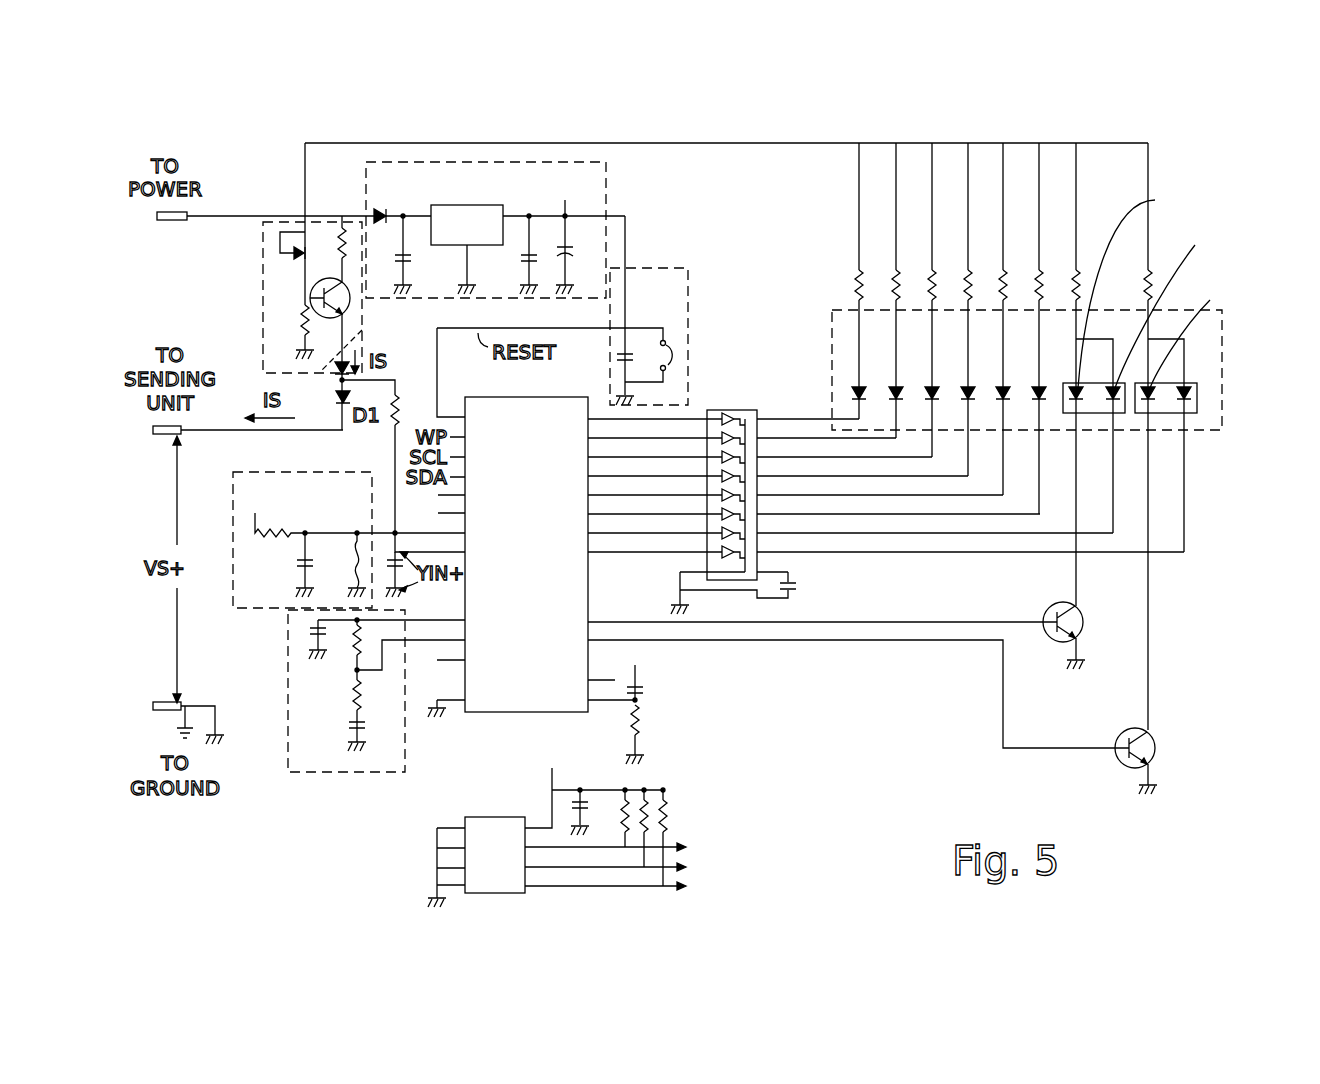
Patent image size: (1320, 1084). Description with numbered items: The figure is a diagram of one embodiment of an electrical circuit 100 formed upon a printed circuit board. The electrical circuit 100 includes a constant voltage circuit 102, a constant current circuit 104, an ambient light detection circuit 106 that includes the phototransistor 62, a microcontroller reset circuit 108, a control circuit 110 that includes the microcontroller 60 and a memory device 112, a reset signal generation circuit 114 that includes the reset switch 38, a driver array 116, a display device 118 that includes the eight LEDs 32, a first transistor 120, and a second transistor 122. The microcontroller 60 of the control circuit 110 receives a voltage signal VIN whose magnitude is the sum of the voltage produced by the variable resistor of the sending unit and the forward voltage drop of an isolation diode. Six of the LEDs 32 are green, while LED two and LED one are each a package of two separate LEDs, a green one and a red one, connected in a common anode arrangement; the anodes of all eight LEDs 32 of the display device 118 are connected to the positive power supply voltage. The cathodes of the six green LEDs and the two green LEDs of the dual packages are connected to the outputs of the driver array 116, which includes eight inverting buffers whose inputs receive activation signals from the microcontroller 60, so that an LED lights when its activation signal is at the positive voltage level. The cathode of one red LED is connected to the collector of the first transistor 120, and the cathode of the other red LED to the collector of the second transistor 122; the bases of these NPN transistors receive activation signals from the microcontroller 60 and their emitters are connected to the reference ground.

The electrical circuit 100 is at (690, 133).
The constant voltage circuit 102 is at (486, 230).
The constant current circuit 104 is at (263, 316).
The ambient light detection circuit 106 is at (349, 540).
The microcontroller reset circuit 108 is at (376, 691).
The control circuit 110 is at (512, 836).
The memory device 112 is at (494, 829).
The reset signal generation circuit 114 is at (674, 310).
The driver array 116 is at (745, 408).
The display device 118 is at (1198, 432).
The first transistor 120 is at (1083, 618).
The second transistor 122 is at (1155, 742).
The LEDs 32 is at (1052, 436).
The reset switch 38 is at (670, 341).
The microcontroller 60 is at (526, 554).
The phototransistor 62 is at (347, 559).